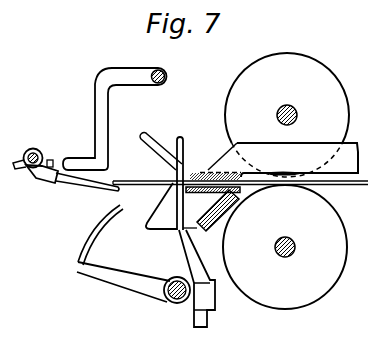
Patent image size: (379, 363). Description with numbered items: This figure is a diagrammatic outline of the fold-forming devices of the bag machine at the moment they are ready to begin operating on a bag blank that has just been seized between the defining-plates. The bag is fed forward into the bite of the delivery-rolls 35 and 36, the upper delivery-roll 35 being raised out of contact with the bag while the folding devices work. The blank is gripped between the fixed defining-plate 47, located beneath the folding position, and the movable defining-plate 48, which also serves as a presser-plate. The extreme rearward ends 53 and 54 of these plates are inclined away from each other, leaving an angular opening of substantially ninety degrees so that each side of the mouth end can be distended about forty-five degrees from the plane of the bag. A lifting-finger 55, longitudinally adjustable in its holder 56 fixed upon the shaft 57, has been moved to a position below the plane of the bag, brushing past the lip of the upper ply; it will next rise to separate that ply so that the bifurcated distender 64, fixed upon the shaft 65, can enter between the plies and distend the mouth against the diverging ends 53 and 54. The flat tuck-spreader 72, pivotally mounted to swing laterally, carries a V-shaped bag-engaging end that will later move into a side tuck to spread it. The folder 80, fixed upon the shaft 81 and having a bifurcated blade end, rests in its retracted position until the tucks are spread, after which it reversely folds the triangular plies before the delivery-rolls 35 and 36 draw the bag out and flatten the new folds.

The upper delivery-roll 35 is at (287, 115).
The lower delivery-roll 36 is at (285, 247).
The fixed defining-plate 47 is at (211, 209).
The movable defining-plate 48 is at (226, 167).
The rearward end of fixed defining-plate 53 is at (162, 210).
The rearward end of movable defining-plate 54 is at (148, 134).
The lifting-finger 55 is at (78, 189).
The holder 56 is at (43, 176).
The shaft 57 is at (35, 149).
The distender 64 is at (102, 92).
The shaft 65 is at (164, 74).
The tuck-spreader 72 is at (180, 140).
The folder 80 is at (88, 230).
The shaft 81 is at (163, 298).